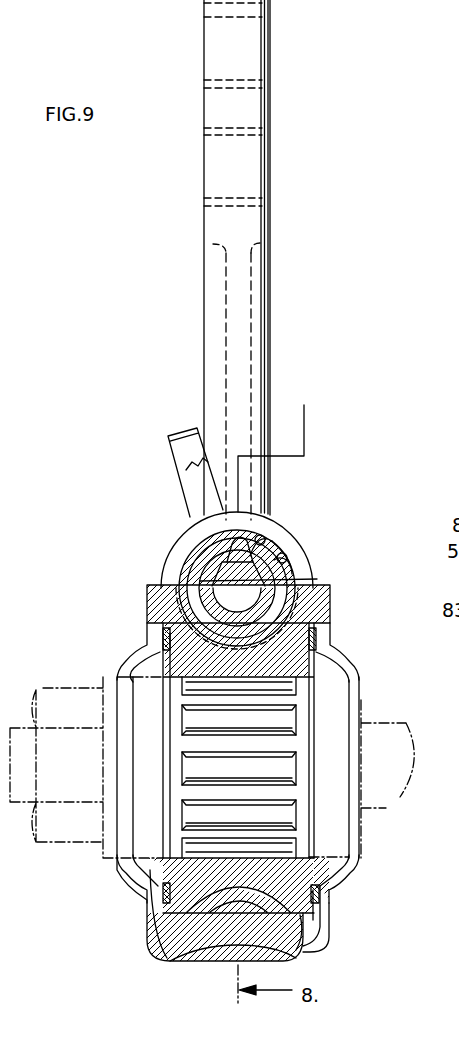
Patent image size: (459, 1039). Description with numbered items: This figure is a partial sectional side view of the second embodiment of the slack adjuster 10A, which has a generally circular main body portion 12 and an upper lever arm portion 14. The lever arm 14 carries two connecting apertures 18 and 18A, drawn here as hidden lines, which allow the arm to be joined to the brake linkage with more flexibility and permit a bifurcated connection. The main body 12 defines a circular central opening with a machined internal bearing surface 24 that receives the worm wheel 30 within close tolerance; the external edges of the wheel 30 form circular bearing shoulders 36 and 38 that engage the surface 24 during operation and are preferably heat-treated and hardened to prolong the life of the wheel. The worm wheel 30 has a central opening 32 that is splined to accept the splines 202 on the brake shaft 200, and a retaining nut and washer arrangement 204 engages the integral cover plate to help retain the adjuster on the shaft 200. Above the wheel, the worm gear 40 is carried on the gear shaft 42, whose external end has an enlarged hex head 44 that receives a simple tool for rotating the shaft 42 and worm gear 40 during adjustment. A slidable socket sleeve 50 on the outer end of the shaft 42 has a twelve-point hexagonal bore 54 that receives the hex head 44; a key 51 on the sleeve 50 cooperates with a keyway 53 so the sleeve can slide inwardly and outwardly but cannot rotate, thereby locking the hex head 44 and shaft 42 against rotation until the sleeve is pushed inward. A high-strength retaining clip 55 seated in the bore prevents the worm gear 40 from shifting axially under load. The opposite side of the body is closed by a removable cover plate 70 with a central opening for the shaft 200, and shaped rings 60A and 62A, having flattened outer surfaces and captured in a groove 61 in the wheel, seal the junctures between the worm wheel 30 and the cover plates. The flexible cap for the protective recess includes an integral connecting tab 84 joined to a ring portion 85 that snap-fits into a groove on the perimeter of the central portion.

The slack adjuster 10A is at (287, 302).
The main body portion 12 is at (153, 933).
The lever arm portion 14 is at (222, 237).
The connecting aperture 18 is at (220, 18).
The connecting aperture 18A is at (245, 138).
The internal bearing surface 24 is at (195, 950).
The worm wheel 30 is at (306, 943).
The central opening 32 is at (282, 765).
The bearing shoulder 36 is at (326, 938).
The bearing shoulder 38 is at (163, 960).
The worm gear 40 is at (284, 603).
The gear shaft 42 is at (205, 585).
The hex head 44 is at (228, 572).
The socket sleeve 50 is at (263, 555).
The key 51 is at (240, 542).
The keyway 53 is at (230, 540).
The hexagonal bore 54 is at (315, 579).
The retaining clip 55 is at (290, 567).
The shaped ring seal 60A is at (317, 637).
The groove 61 is at (296, 663).
The shaped ring seal 62A is at (160, 634).
The removable cover plate 70 is at (347, 658).
The connecting tab 84 is at (180, 447).
The ring portion 85 is at (163, 557).
The brake shaft 200 is at (387, 825).
The splines 202 is at (339, 807).
The retaining nut and washer arrangement 204 is at (82, 690).